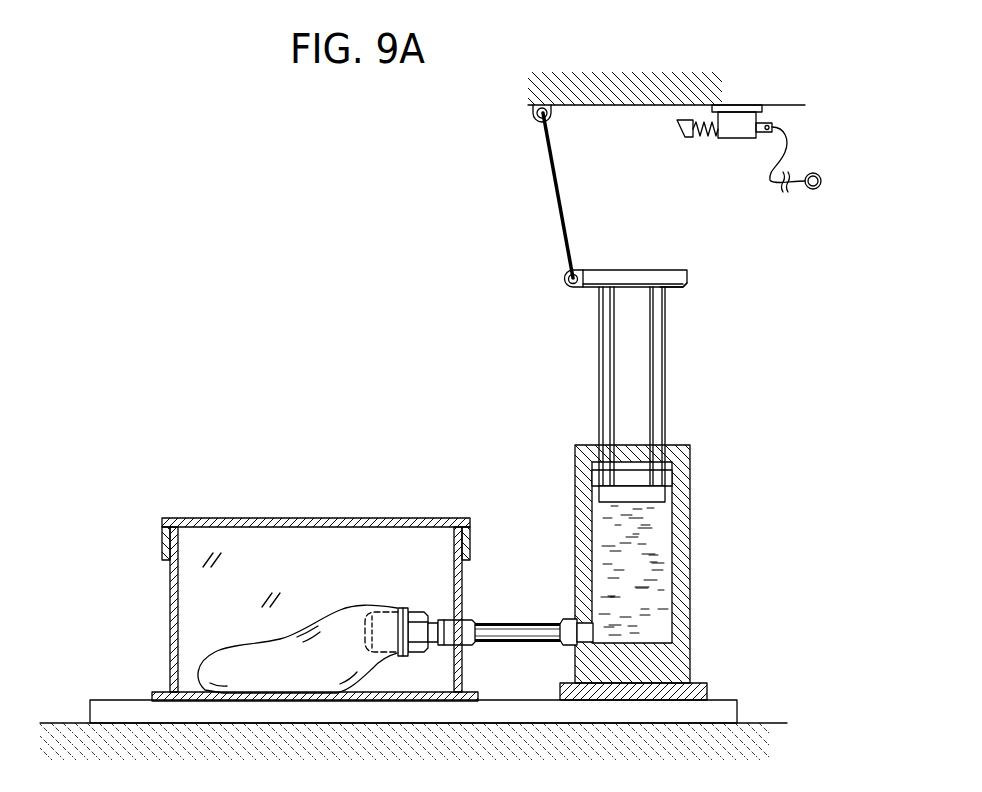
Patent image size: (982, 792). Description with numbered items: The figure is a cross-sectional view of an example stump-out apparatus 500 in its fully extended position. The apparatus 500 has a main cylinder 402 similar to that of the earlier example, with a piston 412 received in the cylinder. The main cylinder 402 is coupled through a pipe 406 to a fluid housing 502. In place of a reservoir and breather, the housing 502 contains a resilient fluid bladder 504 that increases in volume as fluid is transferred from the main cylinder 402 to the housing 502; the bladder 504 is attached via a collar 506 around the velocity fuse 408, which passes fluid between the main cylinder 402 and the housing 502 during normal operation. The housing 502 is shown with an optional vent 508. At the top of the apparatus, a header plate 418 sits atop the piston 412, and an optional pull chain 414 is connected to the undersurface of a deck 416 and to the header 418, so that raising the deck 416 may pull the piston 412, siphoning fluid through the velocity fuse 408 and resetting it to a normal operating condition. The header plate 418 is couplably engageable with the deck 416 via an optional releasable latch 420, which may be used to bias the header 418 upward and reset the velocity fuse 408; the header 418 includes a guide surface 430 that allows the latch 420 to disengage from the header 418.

The stump-out apparatus 500 is at (351, 271).
The deck 416 is at (632, 107).
The pull chain 414 is at (553, 170).
The releasable latch 420 is at (685, 174).
The header plate 418 is at (674, 270).
The guide surface 430 is at (680, 289).
The main cylinder 402 is at (573, 517).
The piston 412 is at (598, 347).
The pipe 406 is at (520, 621).
The velocity fuse 408 is at (416, 612).
The collar 506 is at (400, 608).
The resilient fluid bladder 504 is at (258, 636).
The fluid housing 502 is at (305, 517).
The vent 508 is at (225, 517).